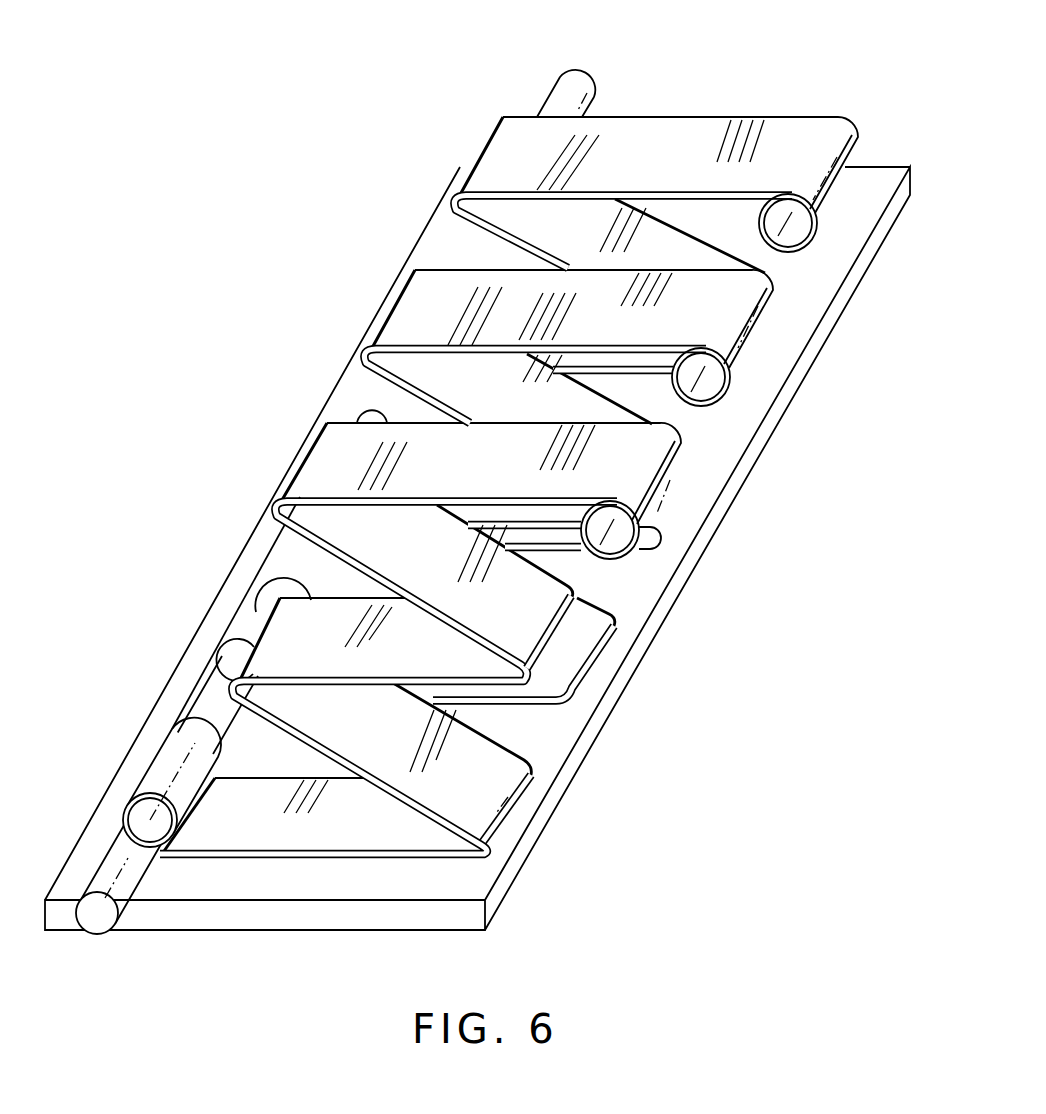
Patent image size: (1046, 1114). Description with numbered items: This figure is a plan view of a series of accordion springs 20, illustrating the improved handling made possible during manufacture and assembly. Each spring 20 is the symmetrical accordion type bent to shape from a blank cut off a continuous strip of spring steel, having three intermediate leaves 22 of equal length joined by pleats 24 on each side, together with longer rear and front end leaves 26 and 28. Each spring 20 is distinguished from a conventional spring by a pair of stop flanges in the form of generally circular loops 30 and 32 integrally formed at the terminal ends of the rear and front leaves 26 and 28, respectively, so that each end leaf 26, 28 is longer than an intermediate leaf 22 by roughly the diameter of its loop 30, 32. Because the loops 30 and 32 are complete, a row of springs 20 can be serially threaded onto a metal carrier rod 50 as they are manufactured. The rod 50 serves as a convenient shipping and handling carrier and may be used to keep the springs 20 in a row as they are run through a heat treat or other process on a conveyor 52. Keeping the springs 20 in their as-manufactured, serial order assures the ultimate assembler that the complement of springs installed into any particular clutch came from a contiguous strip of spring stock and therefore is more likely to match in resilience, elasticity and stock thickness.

The spring 20 is at (526, 460).
The intermediate leaf 22 is at (433, 357).
The pleat 24 is at (483, 143).
The rear leaf 26 is at (365, 838).
The front leaf 28 is at (782, 133).
The rear loop 30 is at (168, 762).
The front loop 32 is at (806, 248).
The carrier rod 50 is at (562, 90).
The conveyor 52 is at (880, 173).